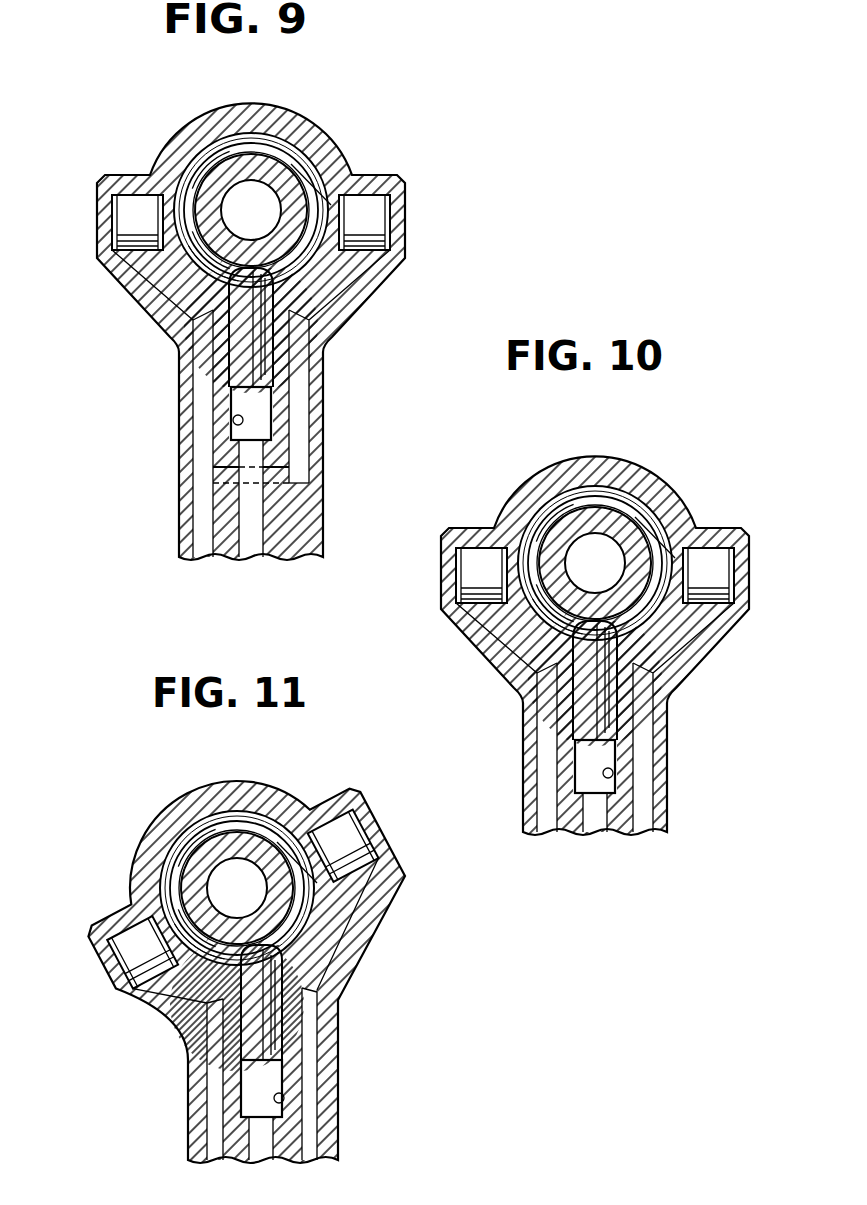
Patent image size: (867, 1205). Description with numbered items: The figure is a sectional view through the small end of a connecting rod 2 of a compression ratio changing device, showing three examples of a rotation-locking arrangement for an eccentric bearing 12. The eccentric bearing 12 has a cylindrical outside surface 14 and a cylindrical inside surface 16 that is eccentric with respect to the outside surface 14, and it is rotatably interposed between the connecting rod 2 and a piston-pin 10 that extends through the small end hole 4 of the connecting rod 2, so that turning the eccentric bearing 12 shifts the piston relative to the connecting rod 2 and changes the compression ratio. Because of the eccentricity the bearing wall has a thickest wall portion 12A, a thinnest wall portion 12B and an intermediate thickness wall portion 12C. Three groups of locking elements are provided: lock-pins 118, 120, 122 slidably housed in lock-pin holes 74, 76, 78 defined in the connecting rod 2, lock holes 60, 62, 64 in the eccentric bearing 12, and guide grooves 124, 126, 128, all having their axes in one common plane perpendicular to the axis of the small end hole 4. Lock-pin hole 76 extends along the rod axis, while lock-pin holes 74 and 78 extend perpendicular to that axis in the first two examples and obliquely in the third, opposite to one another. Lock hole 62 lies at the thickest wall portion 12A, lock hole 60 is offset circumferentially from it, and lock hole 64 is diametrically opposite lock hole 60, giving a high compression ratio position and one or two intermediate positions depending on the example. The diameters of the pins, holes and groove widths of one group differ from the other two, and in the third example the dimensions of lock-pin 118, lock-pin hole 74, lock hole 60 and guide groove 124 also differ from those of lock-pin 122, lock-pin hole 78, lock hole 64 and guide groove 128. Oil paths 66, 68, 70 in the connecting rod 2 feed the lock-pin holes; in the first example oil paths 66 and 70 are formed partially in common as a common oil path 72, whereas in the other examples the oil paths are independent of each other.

In FIG. 9, the connecting rod 2 is at (322, 470).
In FIG. 10, the connecting rod 2 is at (670, 813).
In FIG. 11, the connecting rod 2 is at (338, 1097).
In FIG. 9, the small end hole 4 is at (298, 176).
In FIG. 10, the small end hole 4 is at (577, 483).
In FIG. 11, the small end hole 4 is at (185, 833).
In FIG. 9, the piston-pin 10 is at (197, 162).
In FIG. 10, the piston-pin 10 is at (552, 520).
In FIG. 11, the piston-pin 10 is at (197, 867).
In FIG. 9, the eccentric bearing 12 is at (273, 140).
In FIG. 10, the eccentric bearing 12 is at (612, 497).
In FIG. 11, the eccentric bearing 12 is at (253, 823).
In FIG. 9, the thickest wall portion 12A is at (175, 333).
In FIG. 10, the thickest wall portion 12A is at (540, 687).
In FIG. 11, the thickest wall portion 12A is at (340, 960).
In FIG. 9, the thinnest wall portion 12B is at (240, 142).
In FIG. 10, the thinnest wall portion 12B is at (612, 498).
In FIG. 11, the thinnest wall portion 12B is at (192, 828).
In FIG. 9, the intermediate thickness wall portion 12C is at (187, 245).
In FIG. 10, the intermediate thickness wall portion 12C is at (497, 610).
In FIG. 11, the intermediate thickness wall portion 12C is at (388, 893).
In FIG. 9, the cylindrical outside surface 14 is at (325, 253).
In FIG. 10, the cylindrical outside surface 14 is at (543, 505).
In FIG. 11, the cylindrical outside surface 14 is at (183, 873).
In FIG. 9, the cylindrical inside surface 16 is at (290, 290).
In FIG. 10, the cylindrical inside surface 16 is at (528, 550).
In FIG. 11, the cylindrical inside surface 16 is at (182, 884).
In FIG. 9, the lock hole 60 is at (187, 300).
In FIG. 10, the lock hole 60 is at (517, 648).
In FIG. 11, the lock hole 60 is at (170, 898).
In FIG. 9, the lock hole 62 is at (258, 372).
In FIG. 10, the lock hole 62 is at (613, 670).
In FIG. 11, the lock hole 62 is at (280, 1000).
In FIG. 9, the lock hole 64 is at (317, 173).
In FIG. 10, the lock hole 64 is at (660, 512).
In FIG. 11, the lock hole 64 is at (293, 827).
In FIG. 9, the oil path 66 is at (203, 410).
In FIG. 10, the oil path 66 is at (543, 760).
In FIG. 11, the oil path 66 is at (213, 1070).
In FIG. 9, the oil path 68 is at (247, 537).
In FIG. 10, the oil path 68 is at (589, 825).
In FIG. 11, the oil path 68 is at (262, 1157).
In FIG. 9, the oil path 70 is at (293, 410).
In FIG. 10, the oil path 70 is at (648, 762).
In FIG. 11, the oil path 70 is at (303, 1065).
In FIG. 9, the common oil path 72 is at (203, 507).
In FIG. 9, the lock-pin hole 74 is at (150, 233).
In FIG. 10, the lock-pin hole 74 is at (488, 580).
In FIG. 11, the lock-pin hole 74 is at (113, 938).
In FIG. 9, the lock-pin hole 76 is at (237, 420).
In FIG. 10, the lock-pin hole 76 is at (608, 775).
In FIG. 11, the lock-pin hole 76 is at (272, 1105).
In FIG. 9, the lock-pin hole 78 is at (335, 242).
In FIG. 10, the lock-pin hole 78 is at (700, 582).
In FIG. 11, the lock-pin hole 78 is at (350, 818).
In FIG. 9, the lock-pin 118 is at (140, 198).
In FIG. 10, the lock-pin 118 is at (505, 570).
In FIG. 11, the lock-pin 118 is at (122, 978).
In FIG. 9, the lock-pin 120 is at (253, 383).
In FIG. 10, the lock-pin 120 is at (600, 717).
In FIG. 11, the lock-pin 120 is at (243, 1097).
In FIG. 9, the lock-pin 122 is at (360, 207).
In FIG. 10, the lock-pin 122 is at (715, 565).
In FIG. 11, the lock-pin 122 is at (373, 850).
In FIG. 9, the guide groove 124 is at (213, 183).
In FIG. 10, the guide groove 124 is at (540, 547).
In FIG. 11, the guide groove 124 is at (207, 845).
In FIG. 9, the guide groove 126 is at (195, 330).
In FIG. 10, the guide groove 126 is at (520, 670).
In FIG. 11, the guide groove 126 is at (200, 1005).
In FIG. 9, the guide groove 128 is at (333, 183).
In FIG. 10, the guide groove 128 is at (668, 545).
In FIG. 11, the guide groove 128 is at (275, 940).